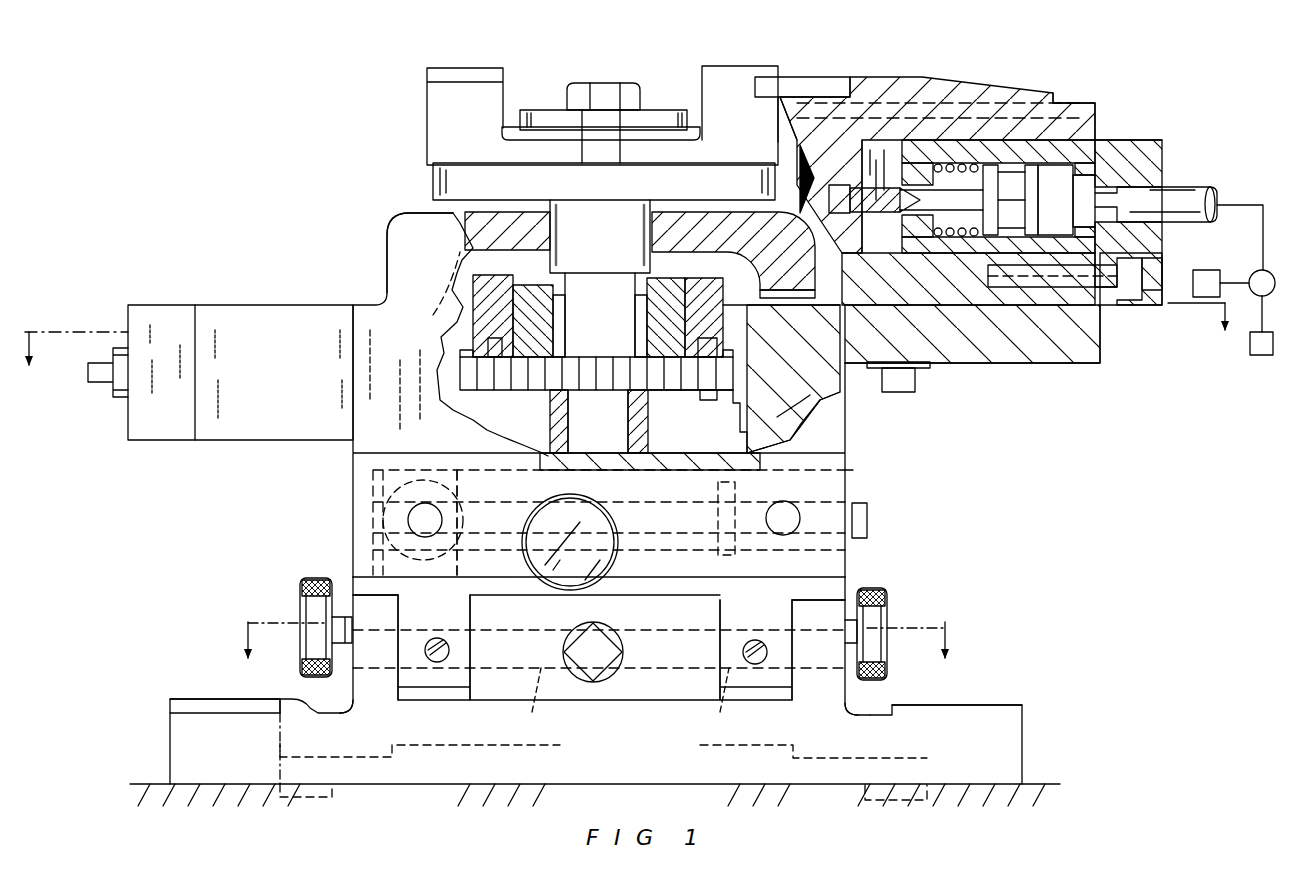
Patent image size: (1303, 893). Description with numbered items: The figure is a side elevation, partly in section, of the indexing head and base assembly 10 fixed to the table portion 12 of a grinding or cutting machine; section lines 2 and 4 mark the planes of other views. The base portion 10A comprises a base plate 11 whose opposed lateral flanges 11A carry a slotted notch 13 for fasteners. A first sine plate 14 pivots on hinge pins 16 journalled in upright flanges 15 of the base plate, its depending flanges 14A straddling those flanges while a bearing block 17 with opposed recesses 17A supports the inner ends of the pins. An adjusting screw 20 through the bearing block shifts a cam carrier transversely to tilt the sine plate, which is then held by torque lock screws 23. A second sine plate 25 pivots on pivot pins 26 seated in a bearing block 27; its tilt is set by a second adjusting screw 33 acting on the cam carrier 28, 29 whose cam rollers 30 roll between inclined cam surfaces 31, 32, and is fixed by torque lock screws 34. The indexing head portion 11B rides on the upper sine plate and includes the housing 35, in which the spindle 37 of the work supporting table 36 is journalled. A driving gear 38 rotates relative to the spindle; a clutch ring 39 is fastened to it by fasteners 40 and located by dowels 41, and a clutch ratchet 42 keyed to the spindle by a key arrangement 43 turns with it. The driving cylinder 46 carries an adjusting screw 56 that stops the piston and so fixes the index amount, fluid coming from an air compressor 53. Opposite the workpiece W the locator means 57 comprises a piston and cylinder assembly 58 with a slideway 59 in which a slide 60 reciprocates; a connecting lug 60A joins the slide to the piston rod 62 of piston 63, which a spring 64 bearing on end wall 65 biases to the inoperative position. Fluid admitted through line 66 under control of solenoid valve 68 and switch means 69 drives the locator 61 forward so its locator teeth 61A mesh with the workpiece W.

The workpiece W is at (460, 76).
The indexing head and base assembly 10 is at (272, 198).
The base portion 10A is at (876, 557).
The base plate 11 is at (1030, 735).
The lateral flanges 11A is at (183, 732).
The indexing head portion 11B is at (377, 236).
The table portion 12 is at (1058, 784).
The slotted notch 13 is at (280, 742).
The first sine plate 14 is at (837, 590).
The depending flanges 14A is at (463, 613).
The upright flanges 15 is at (358, 685).
The hinge pins 16 is at (505, 668).
The bearing block 17 is at (640, 668).
The opposed recesses 17A is at (628, 700).
The adjusting screw 20 is at (593, 683).
The torque lock screws 23 is at (300, 595).
The second sine plate 25 is at (838, 477).
The pivot pins 26 is at (793, 515).
The bearing block 27 is at (847, 550).
The cam carrier 28 is at (373, 520).
The cam carrier 29 is at (565, 545).
The cam rollers 30 is at (565, 538).
The inclined cam surface 31 is at (497, 540).
The inclined cam surface 32 is at (473, 497).
The second adjusting screw 33 is at (868, 520).
The torque lock screws 34 is at (563, 515).
The housing 35 is at (838, 415).
The work supporting table 36 is at (441, 182).
The spindle 37 is at (660, 290).
The driving gear 38 is at (640, 251).
The clutch ring 39 is at (717, 327).
The fasteners 40 is at (693, 400).
The dowels 41 is at (487, 348).
The clutch ratchet 42 is at (557, 330).
The key arrangement 43 is at (566, 343).
The cylinder 46 is at (236, 280).
The air compressor 53 is at (1262, 356).
The adjusting screw 56 is at (97, 353).
The locator means 57 is at (1030, 62).
The piston and cylinder assembly 58 is at (1135, 140).
The slideway 59 is at (1078, 104).
The slide 60 is at (943, 78).
The connecting lug 60A is at (862, 148).
The locator 61 is at (808, 87).
The locator teeth 61A is at (790, 77).
The piston rod 62 is at (886, 218).
The piston 63 is at (1082, 180).
The spring 64 is at (965, 168).
The end wall 65 is at (930, 246).
The fluid supply line 66 is at (1200, 190).
The solenoid valve 68 is at (1272, 275).
The switch means 69 is at (1206, 272).
The section line 2- 2 is at (620, 355).
The section line 4- 4 is at (591, 659).